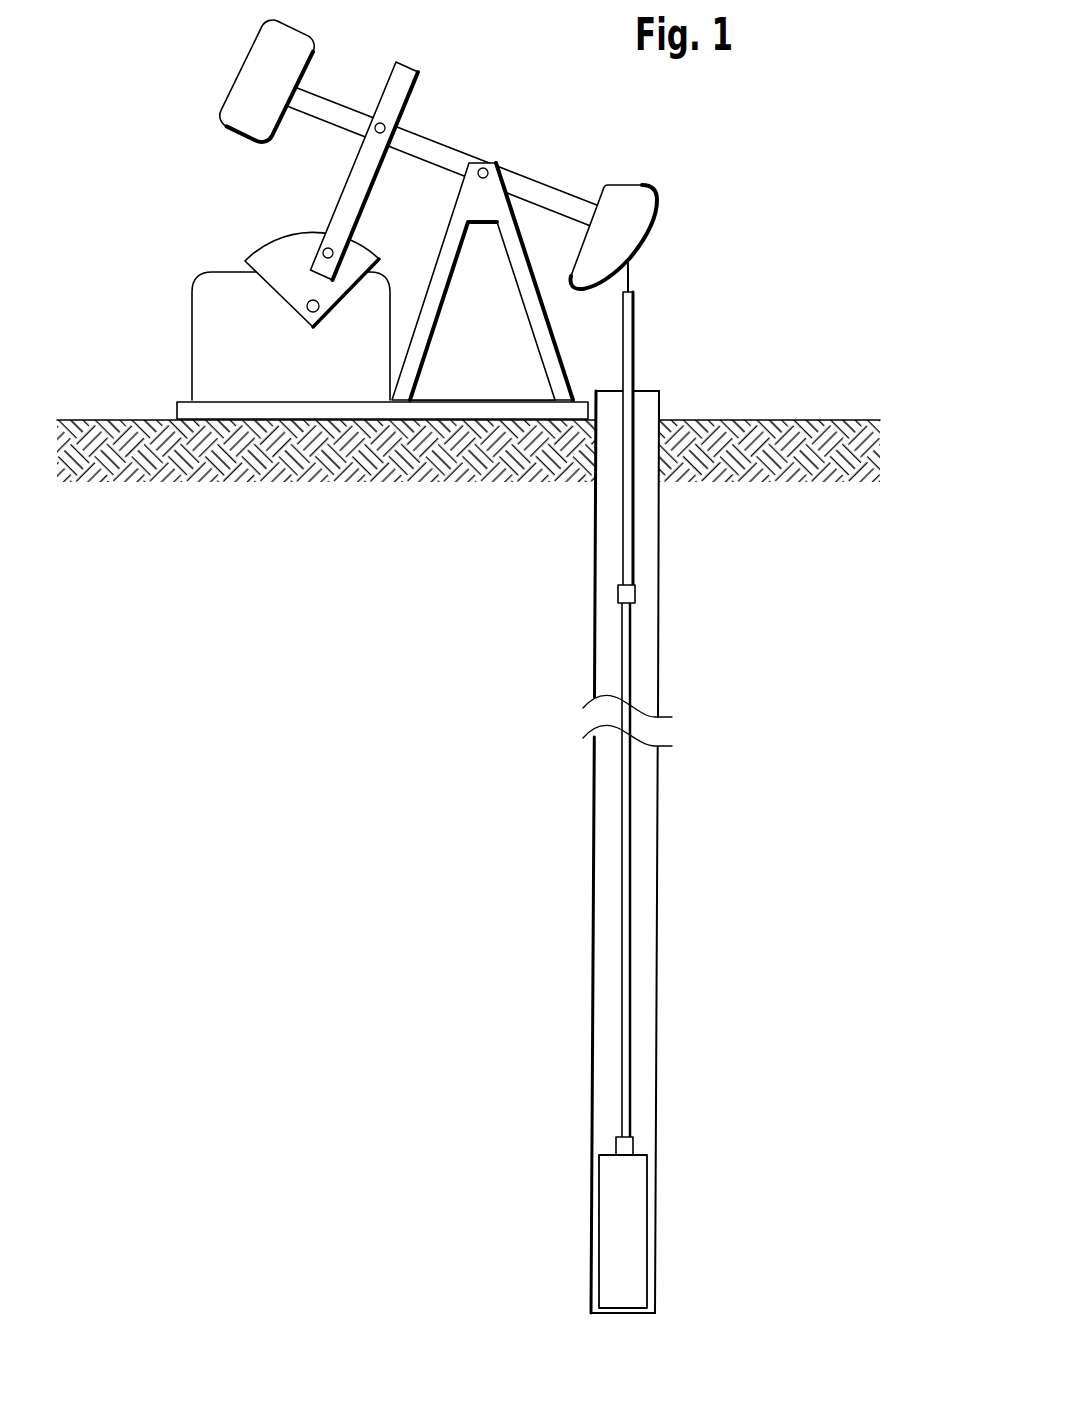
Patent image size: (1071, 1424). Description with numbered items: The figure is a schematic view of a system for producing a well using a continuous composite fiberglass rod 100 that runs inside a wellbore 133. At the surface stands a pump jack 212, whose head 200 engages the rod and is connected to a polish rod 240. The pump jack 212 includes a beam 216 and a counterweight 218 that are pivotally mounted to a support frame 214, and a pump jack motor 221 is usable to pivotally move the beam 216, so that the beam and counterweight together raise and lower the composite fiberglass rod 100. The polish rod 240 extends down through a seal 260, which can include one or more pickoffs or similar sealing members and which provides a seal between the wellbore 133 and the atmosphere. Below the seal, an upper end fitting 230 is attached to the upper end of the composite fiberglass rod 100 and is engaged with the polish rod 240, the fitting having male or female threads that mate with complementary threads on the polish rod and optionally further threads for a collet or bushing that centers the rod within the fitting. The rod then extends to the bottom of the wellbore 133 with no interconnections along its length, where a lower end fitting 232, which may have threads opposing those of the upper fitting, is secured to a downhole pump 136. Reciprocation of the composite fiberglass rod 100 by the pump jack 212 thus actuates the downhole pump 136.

The composite fiberglass rod 100 is at (628, 935).
The wellbore 133 is at (660, 687).
The downhole pump 136 is at (633, 1225).
The head 200 is at (637, 227).
The pump jack 212 is at (577, 189).
The support frame 214 is at (492, 187).
The beam 216 is at (437, 140).
The counterweight 218 is at (228, 90).
The pump jack motor 221 is at (200, 318).
The upper end fitting 230 is at (635, 595).
The lower end fitting 232 is at (633, 1142).
The polish rod 240 is at (633, 332).
The seal 260 is at (635, 390).